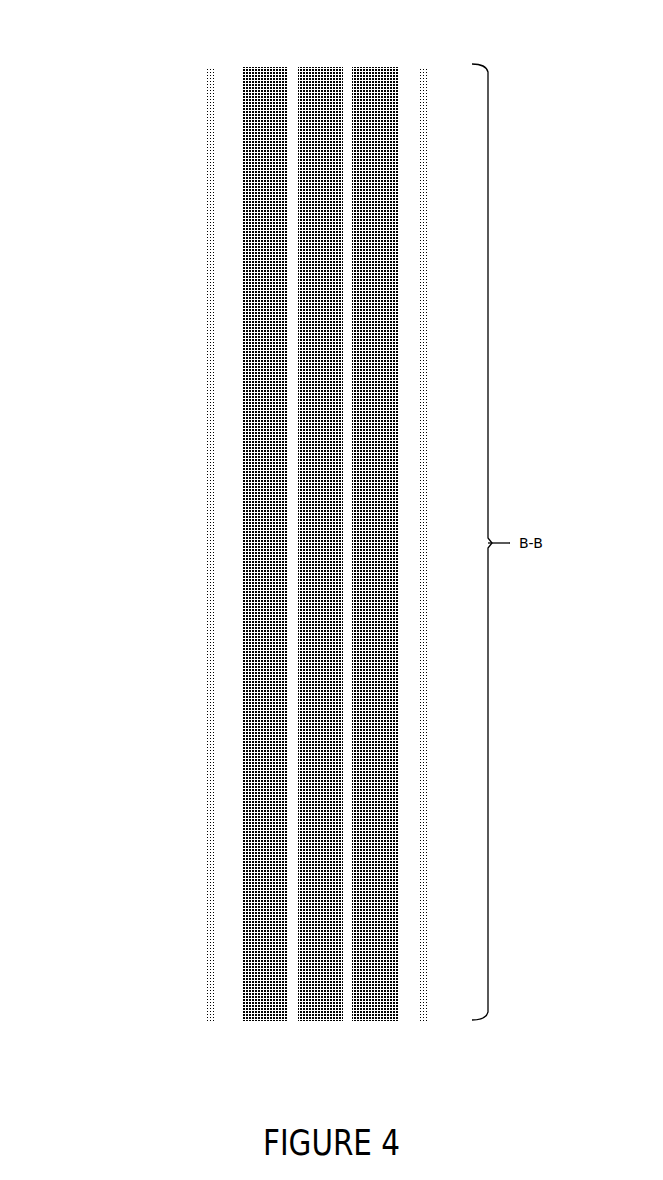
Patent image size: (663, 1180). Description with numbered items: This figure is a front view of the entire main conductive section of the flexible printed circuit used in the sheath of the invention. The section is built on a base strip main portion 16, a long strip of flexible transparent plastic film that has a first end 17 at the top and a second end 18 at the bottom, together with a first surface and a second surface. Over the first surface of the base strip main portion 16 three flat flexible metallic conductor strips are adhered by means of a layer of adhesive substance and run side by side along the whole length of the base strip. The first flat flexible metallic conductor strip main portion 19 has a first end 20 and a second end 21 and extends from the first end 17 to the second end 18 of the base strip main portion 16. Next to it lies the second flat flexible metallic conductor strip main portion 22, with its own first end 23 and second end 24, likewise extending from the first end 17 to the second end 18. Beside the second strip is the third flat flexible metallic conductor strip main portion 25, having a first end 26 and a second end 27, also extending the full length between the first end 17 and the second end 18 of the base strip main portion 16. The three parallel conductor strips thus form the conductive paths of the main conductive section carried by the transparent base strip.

The base strip main portion 16 is at (228, 525).
The first end of the base strip main portion 17 is at (200, 84).
The second end of the base strip main portion 18 is at (198, 990).
The first flat flexible metallic conductor strip main portion 19 is at (262, 279).
The first end of the first flat flexible metallic conductor strip main portion 20 is at (265, 78).
The second end of the first flat flexible metallic conductor strip main portion 21 is at (265, 1000).
The second flat flexible metallic conductor strip main portion 22 is at (327, 352).
The first end of the second flat flexible metallic conductor strip main portion 23 is at (319, 78).
The second end of the second flat flexible metallic conductor strip main portion 24 is at (317, 1000).
The third flat flexible metallic conductor strip main portion 25 is at (375, 423).
The first end of the third flat flexible metallic conductor strip main portion 26 is at (370, 78).
The second end of the third flat flexible metallic conductor strip main portion 27 is at (376, 1000).